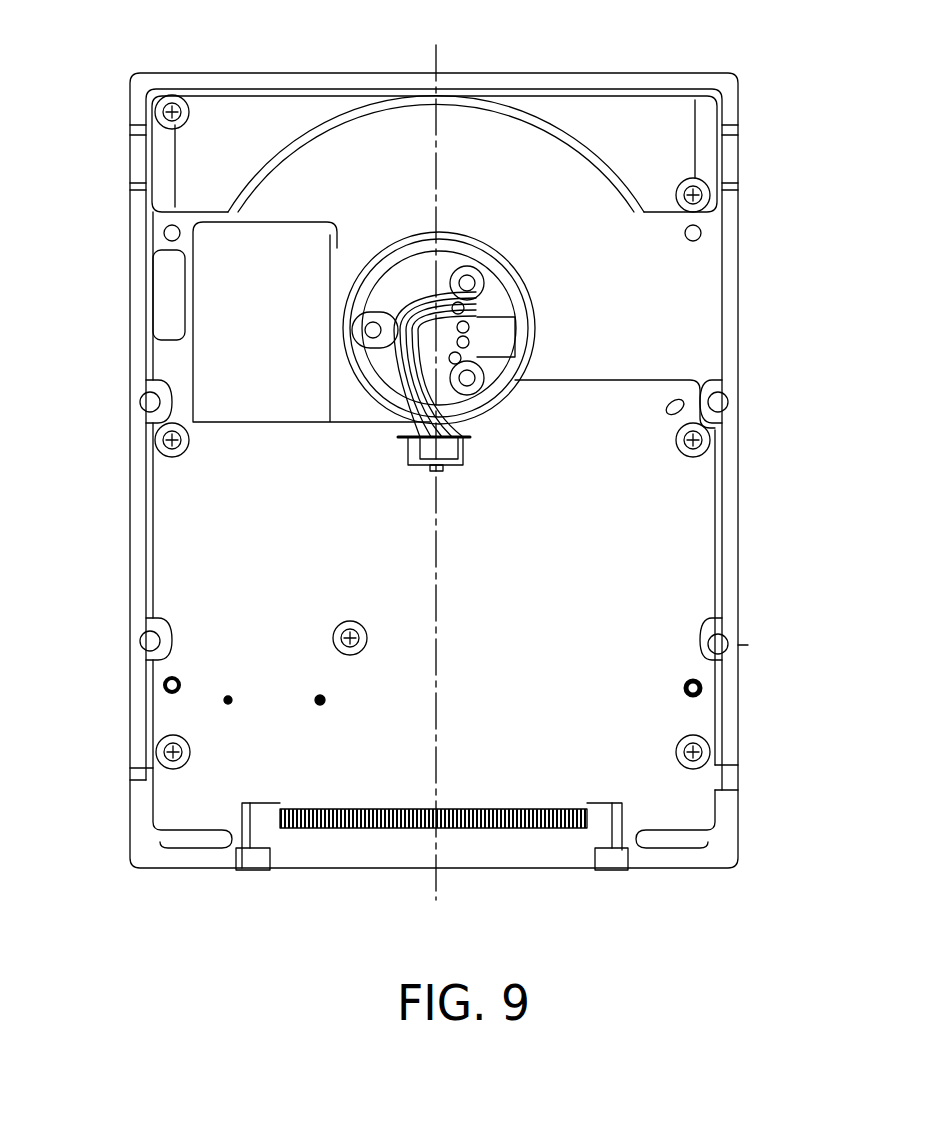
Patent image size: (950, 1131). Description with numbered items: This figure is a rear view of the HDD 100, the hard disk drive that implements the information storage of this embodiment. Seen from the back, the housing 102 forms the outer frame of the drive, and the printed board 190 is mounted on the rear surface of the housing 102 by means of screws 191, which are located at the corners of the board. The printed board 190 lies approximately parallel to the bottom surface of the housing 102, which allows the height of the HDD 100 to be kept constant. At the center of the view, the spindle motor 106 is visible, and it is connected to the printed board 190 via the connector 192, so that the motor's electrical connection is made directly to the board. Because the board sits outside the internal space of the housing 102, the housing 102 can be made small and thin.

The HDD 100 is at (797, 70).
The housing 102 is at (726, 213).
The spindle motor 106 is at (473, 320).
The printed board 190 is at (683, 584).
The screws 191 is at (158, 444).
The connector 192 is at (473, 450).